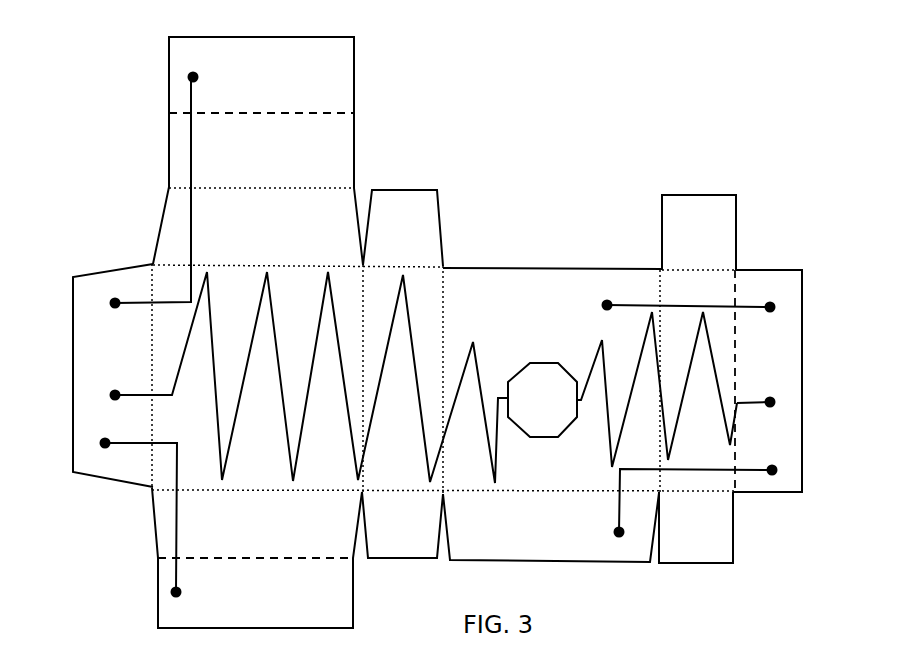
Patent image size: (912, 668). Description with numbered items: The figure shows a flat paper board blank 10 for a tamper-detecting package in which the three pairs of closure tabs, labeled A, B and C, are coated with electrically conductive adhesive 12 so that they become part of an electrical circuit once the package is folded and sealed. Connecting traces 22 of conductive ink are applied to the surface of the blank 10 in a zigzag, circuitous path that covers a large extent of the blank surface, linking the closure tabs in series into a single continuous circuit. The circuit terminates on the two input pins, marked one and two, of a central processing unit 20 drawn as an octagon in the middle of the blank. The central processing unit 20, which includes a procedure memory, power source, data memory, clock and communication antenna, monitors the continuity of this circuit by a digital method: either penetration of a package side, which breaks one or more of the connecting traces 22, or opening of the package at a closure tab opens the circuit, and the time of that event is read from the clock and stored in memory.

The blank 10 is at (425, 124).
The electrically conductive adhesive 12 is at (95, 302).
The central processing unit 20 is at (500, 307).
The connecting traces 22 is at (415, 285).